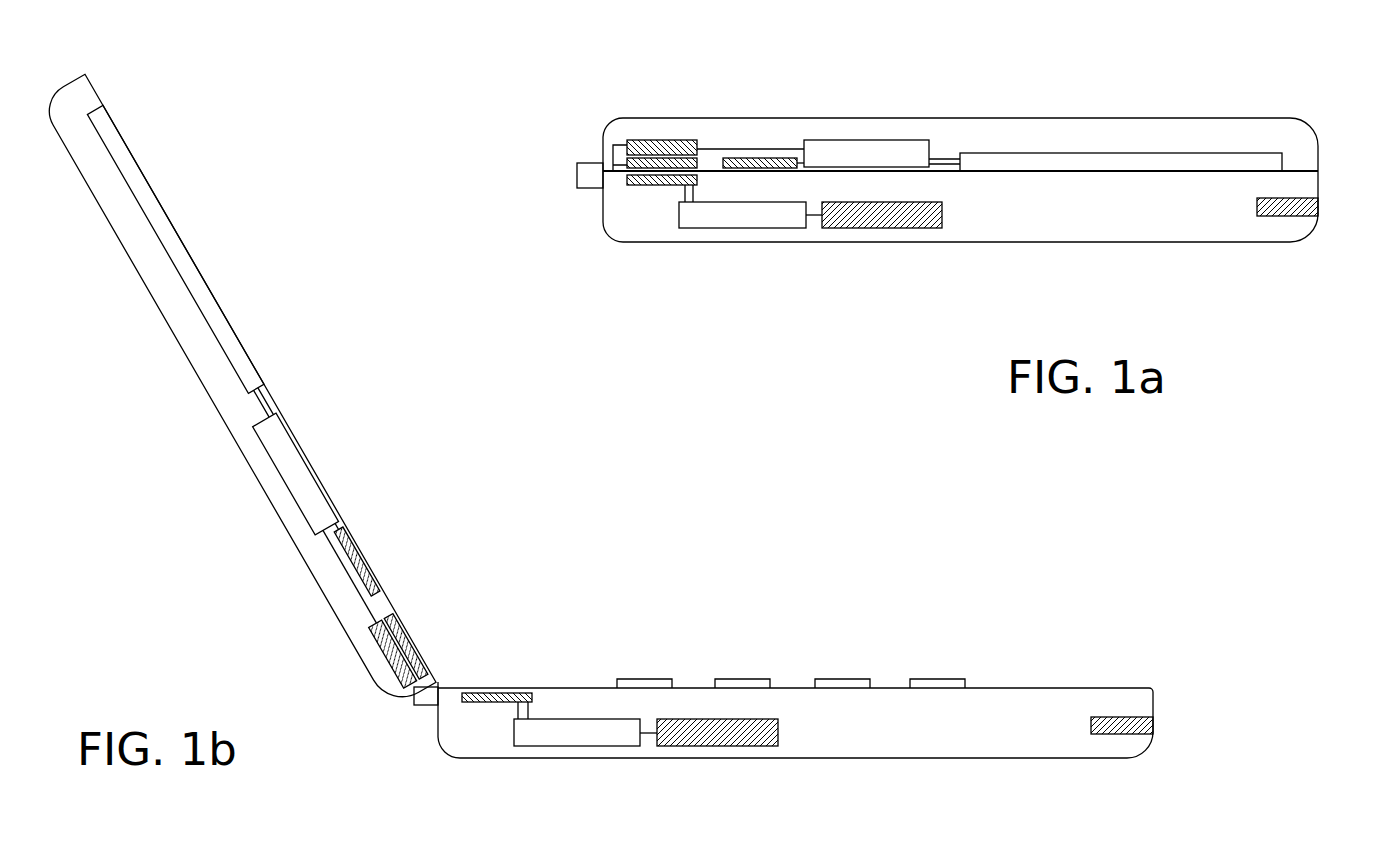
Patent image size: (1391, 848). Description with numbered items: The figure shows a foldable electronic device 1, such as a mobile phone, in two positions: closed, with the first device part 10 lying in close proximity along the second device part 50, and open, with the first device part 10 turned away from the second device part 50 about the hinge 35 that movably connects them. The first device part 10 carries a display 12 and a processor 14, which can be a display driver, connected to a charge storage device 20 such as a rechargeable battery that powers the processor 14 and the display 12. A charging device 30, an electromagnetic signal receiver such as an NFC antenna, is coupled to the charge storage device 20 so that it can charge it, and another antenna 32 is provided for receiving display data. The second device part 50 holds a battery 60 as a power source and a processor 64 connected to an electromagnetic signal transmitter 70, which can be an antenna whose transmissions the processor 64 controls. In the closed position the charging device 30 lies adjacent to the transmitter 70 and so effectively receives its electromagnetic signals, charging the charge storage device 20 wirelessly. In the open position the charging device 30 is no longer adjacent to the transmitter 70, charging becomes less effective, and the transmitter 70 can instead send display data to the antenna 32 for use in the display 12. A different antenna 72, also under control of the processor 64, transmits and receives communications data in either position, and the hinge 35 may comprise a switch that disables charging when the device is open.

In FIG. 1a, the electronic device 1 is at (565, 80).
In FIG. 1b, the electronic device 1 is at (637, 470).
In FIG. 1a, the first device part 10 is at (1078, 118).
In FIG. 1b, the first device part 10 is at (192, 362).
In FIG. 1a, the display 12 is at (985, 153).
In FIG. 1b, the display 12 is at (190, 258).
In FIG. 1a, the processor 14 is at (838, 148).
In FIG. 1b, the processor 14 is at (305, 478).
In FIG. 1a, the charge storage device 20 is at (660, 140).
In FIG. 1b, the charge storage device 20 is at (380, 643).
In FIG. 1a, the charging device 30 is at (700, 160).
In FIG. 1b, the charging device 30 is at (410, 648).
In FIG. 1a, the antenna 32 is at (745, 158).
In FIG. 1b, the antenna 32 is at (370, 573).
In FIG. 1a, the hinge 35 is at (577, 177).
In FIG. 1b, the hinge 35 is at (425, 712).
In FIG. 1a, the second device part 50 is at (1098, 240).
In FIG. 1b, the second device part 50 is at (965, 752).
In FIG. 1a, the battery 60 is at (900, 230).
In FIG. 1b, the battery 60 is at (720, 745).
In FIG. 1a, the processor 64 is at (762, 230).
In FIG. 1b, the processor 64 is at (565, 745).
In FIG. 1a, the electromagnetic signal transmitter 70 is at (655, 188).
In FIG. 1b, the electromagnetic signal transmitter 70 is at (488, 690).
In FIG. 1a, the antenna 72 is at (1305, 200).
In FIG. 1b, the antenna 72 is at (1147, 717).